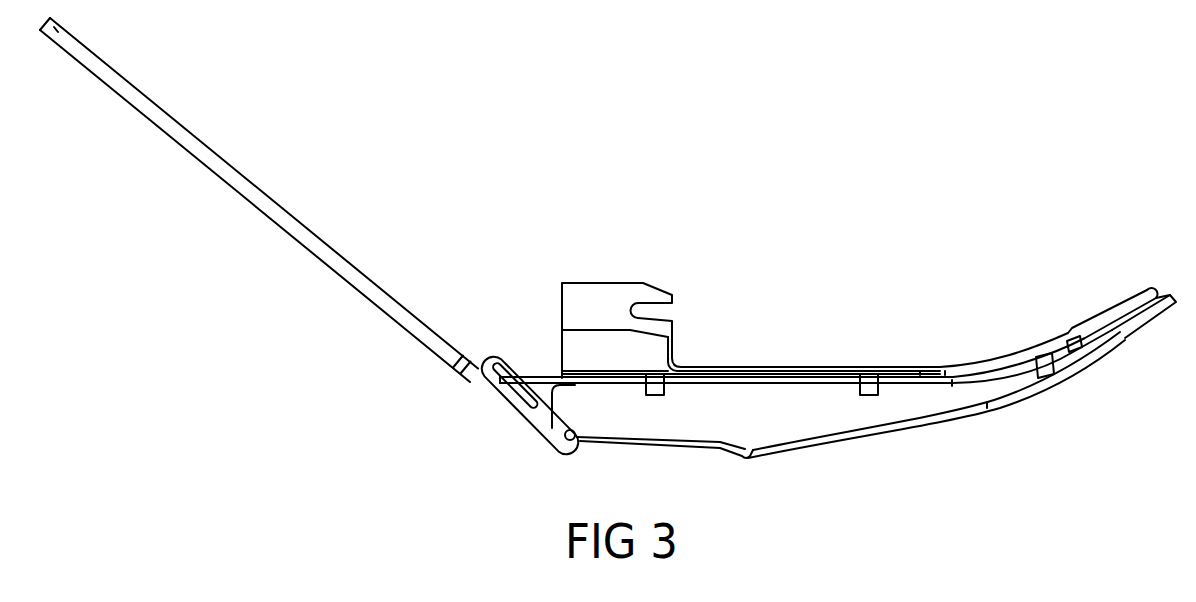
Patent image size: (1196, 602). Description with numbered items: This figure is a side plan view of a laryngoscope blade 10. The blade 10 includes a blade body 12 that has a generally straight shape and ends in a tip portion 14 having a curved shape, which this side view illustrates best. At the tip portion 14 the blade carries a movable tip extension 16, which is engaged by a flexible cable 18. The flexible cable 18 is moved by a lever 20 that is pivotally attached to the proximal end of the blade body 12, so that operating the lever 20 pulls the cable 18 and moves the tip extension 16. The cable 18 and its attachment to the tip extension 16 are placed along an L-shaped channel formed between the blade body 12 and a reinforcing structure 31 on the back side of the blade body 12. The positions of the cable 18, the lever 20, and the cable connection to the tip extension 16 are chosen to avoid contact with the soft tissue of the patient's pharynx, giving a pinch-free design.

The laryngoscope blade 10 is at (638, 227).
The blade body 12 is at (790, 367).
The tip portion 14 is at (1120, 310).
The movable tip extension 16 is at (1118, 328).
The flexible cable 18 is at (935, 383).
The lever 20 is at (230, 177).
The reinforcing structure 31 is at (753, 430).